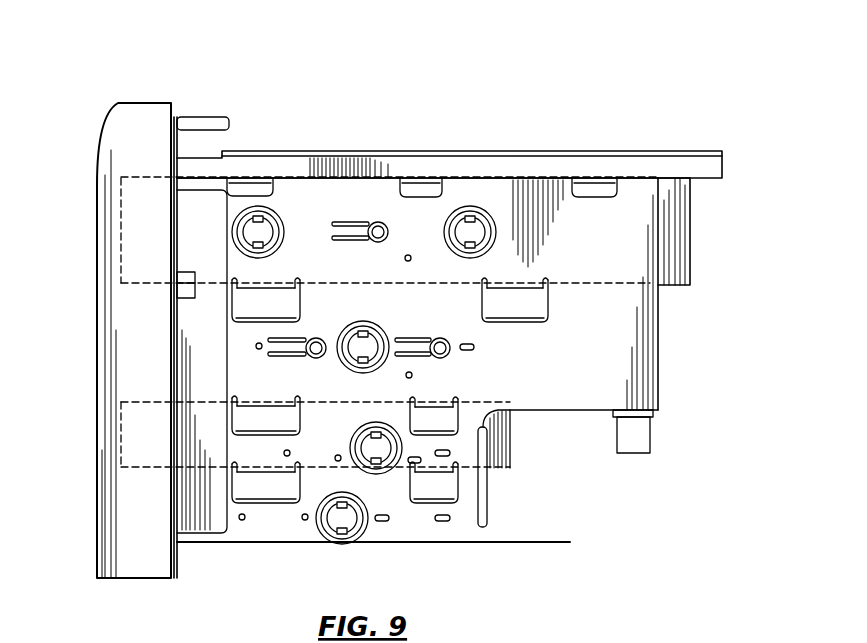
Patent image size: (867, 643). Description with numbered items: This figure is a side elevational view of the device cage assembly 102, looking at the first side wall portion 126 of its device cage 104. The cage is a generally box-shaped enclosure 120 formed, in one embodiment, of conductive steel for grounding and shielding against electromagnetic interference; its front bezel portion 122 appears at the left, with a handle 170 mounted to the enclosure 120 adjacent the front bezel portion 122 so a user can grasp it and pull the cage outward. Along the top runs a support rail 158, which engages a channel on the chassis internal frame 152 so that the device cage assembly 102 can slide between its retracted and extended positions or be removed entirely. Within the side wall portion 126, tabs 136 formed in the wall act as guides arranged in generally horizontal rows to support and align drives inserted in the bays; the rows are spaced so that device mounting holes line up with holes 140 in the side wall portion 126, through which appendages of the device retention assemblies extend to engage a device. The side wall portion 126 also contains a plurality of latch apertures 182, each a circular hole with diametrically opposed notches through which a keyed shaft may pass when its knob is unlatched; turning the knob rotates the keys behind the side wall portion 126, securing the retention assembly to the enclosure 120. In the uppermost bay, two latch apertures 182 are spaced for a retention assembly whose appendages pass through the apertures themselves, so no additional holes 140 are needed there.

The device cage assembly 102 is at (652, 134).
The device cage 104 is at (700, 163).
The enclosure 120 is at (650, 237).
The front bezel portion 122 is at (125, 383).
The side wall portion 126 is at (628, 360).
The tabs 136 is at (272, 290).
The holes 140 is at (420, 460).
The internal frame 152 is at (640, 440).
The support rail 158 is at (477, 152).
The handle 170 is at (198, 121).
The latch apertures 182 is at (267, 216).